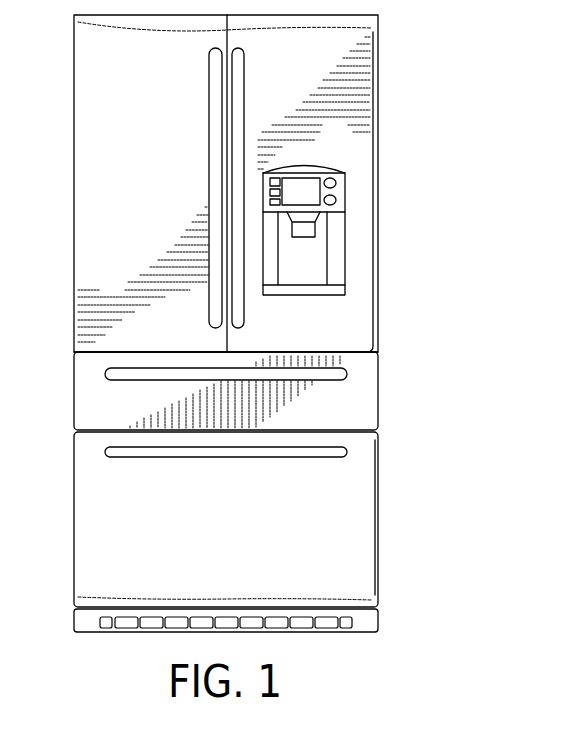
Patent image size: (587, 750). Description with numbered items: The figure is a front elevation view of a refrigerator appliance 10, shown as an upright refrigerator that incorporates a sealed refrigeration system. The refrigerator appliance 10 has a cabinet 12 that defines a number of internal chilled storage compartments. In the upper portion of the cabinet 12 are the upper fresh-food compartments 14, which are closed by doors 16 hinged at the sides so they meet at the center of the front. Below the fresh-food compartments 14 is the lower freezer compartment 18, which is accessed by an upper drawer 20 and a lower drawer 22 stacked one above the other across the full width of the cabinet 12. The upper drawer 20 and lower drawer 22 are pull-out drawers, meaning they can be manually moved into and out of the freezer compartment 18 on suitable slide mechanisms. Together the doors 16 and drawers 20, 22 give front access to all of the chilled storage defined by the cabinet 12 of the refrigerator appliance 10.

The refrigerator appliance 10 is at (435, 103).
The cabinet 12 is at (380, 267).
The upper fresh-food compartments 14 is at (110, 158).
The doors 16 is at (136, 239).
The lower freezer compartment 18 is at (348, 398).
The upper drawer 20 is at (121, 413).
The lower drawer 22 is at (235, 542).